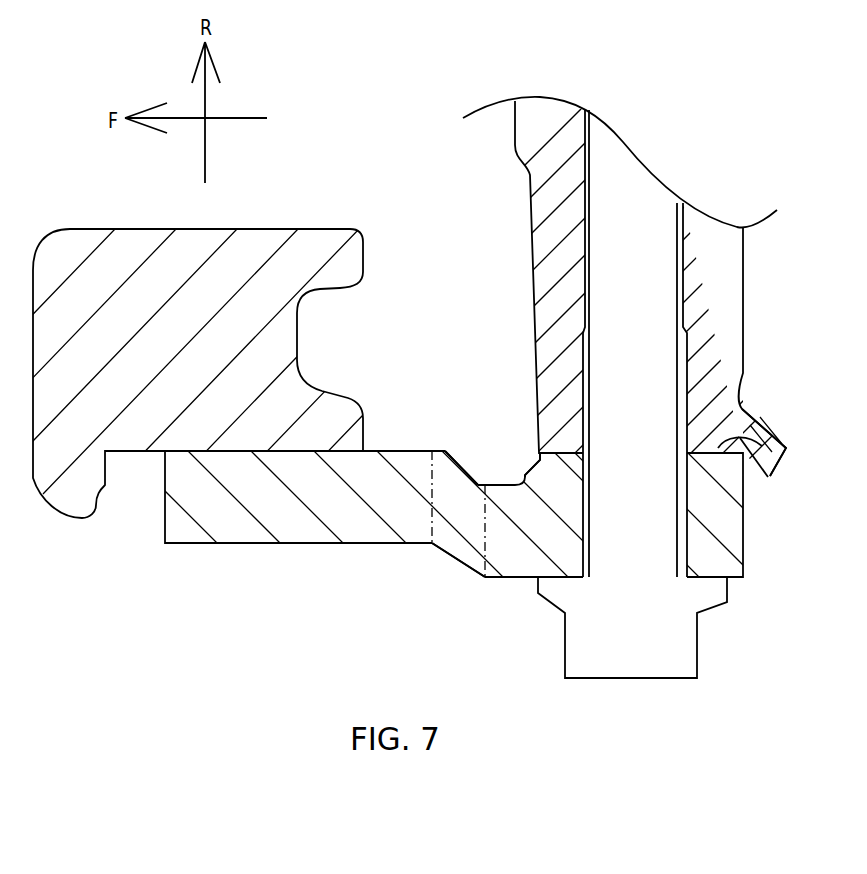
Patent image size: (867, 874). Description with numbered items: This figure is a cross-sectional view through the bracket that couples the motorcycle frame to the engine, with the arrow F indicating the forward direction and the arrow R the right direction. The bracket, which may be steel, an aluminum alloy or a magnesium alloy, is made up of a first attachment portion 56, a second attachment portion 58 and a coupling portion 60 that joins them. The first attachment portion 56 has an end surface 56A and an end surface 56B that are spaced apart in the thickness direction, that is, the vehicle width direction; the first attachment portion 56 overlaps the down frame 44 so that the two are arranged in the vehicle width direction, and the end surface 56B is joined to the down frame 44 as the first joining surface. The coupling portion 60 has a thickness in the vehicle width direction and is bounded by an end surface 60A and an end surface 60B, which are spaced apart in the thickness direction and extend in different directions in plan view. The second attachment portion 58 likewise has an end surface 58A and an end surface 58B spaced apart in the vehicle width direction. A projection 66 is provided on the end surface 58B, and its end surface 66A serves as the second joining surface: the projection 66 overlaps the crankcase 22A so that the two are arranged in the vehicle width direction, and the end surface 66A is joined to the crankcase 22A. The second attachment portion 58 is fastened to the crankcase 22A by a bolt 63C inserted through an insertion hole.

The down frame 44 is at (307, 236).
The crankcase 22A is at (543, 233).
The first attachment portion 56 is at (237, 545).
The end surface 56A is at (290, 547).
The end surface 56B is at (397, 451).
The coupling portion 60 is at (443, 545).
The end surface 60A is at (474, 572).
The end surface 60B is at (460, 466).
The second attachment portion 58 is at (518, 577).
The end surface 58A is at (698, 580).
The end surface 58B is at (503, 482).
The projection 66 is at (536, 462).
The end surface 66A is at (742, 440).
The bolt 63C is at (632, 678).